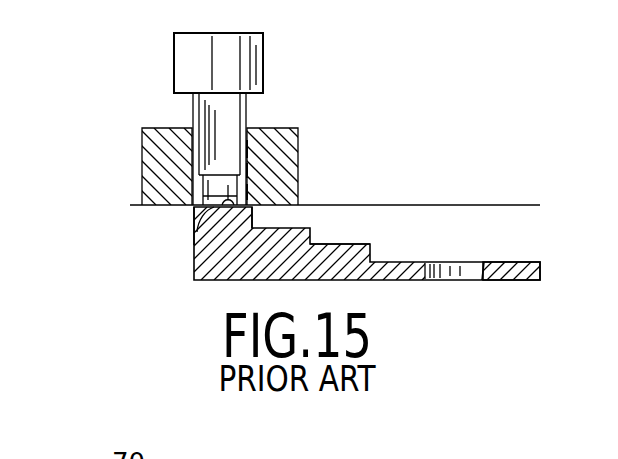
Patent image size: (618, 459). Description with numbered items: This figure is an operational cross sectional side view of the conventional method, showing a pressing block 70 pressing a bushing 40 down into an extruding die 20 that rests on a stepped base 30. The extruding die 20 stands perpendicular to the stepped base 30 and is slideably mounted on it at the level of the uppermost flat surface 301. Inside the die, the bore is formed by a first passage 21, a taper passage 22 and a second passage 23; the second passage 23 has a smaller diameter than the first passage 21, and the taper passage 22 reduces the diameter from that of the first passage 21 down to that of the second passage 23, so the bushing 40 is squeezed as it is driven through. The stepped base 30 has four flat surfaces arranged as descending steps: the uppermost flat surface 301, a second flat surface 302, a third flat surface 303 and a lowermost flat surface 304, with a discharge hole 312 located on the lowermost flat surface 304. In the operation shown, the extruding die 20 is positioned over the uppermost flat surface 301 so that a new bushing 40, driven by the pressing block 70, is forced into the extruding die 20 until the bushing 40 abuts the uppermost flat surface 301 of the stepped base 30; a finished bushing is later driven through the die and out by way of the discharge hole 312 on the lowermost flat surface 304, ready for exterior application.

The pressing block 70 is at (175, 68).
The bushing 40 is at (248, 112).
The extruding die 20 is at (142, 147).
The first passage 21 is at (247, 152).
The taper passage 22 is at (247, 173).
The second passage 23 is at (247, 193).
The stepped base 30 is at (194, 262).
The uppermost flat surface 301 is at (194, 233).
The second flat surface 302 is at (255, 218).
The third flat surface 303 is at (346, 244).
The lowermost flat surface 304 is at (515, 263).
The discharge hole 312 is at (483, 280).